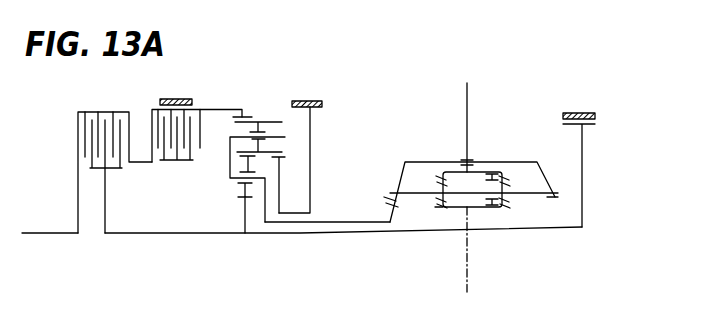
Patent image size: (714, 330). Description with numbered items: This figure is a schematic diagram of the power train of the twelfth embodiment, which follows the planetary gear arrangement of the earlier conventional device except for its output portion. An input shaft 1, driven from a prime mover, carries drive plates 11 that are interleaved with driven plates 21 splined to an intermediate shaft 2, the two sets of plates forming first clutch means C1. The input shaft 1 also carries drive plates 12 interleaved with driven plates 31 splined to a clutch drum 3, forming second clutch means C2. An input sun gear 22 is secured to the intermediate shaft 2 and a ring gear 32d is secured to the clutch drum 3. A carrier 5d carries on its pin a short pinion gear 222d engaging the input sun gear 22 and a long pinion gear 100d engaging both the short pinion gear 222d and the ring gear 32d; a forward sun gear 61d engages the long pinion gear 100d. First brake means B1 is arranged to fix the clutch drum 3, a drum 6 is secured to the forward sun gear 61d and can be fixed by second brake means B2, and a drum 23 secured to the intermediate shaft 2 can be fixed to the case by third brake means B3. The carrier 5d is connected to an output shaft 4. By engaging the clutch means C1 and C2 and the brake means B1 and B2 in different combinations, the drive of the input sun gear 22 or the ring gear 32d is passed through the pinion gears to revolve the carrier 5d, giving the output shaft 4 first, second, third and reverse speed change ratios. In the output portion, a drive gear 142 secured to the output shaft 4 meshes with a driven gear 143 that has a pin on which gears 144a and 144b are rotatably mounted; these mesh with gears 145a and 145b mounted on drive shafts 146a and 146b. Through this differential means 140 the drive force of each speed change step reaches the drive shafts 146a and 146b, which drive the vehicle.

The input shaft 1 is at (50, 232).
The intermediate shaft 2 is at (182, 233).
The clutch drum 3 is at (232, 108).
The output shaft 4 is at (350, 220).
The drive plates 11 is at (96, 117).
The driven plates 21 is at (113, 157).
The driven plates 31 is at (163, 117).
The drive plates 12 is at (189, 162).
The first clutch means C1 is at (98, 177).
The second clutch means C2 is at (167, 176).
The first brake means B1 is at (183, 99).
The second brake means B2 is at (315, 101).
The third brake means B3 is at (580, 112).
The ring gear 32d is at (260, 96).
The long pinion gear 100d is at (277, 121).
The carrier 5d is at (230, 150).
The drum 6 is at (311, 131).
The forward sun gear 61d is at (280, 181).
The short pinion gear 222d is at (240, 187).
The input sun gear 22 is at (247, 215).
The drum 23 is at (587, 127).
The differential means 140 is at (478, 183).
The drive gear 142 is at (392, 212).
The driven gear 143 is at (397, 180).
The gear 144a is at (510, 188).
The gear 144b is at (435, 173).
The gear 145a is at (493, 171).
The gear 145b is at (488, 208).
The drive shaft 146a is at (467, 108).
The drive shaft 146b is at (470, 271).